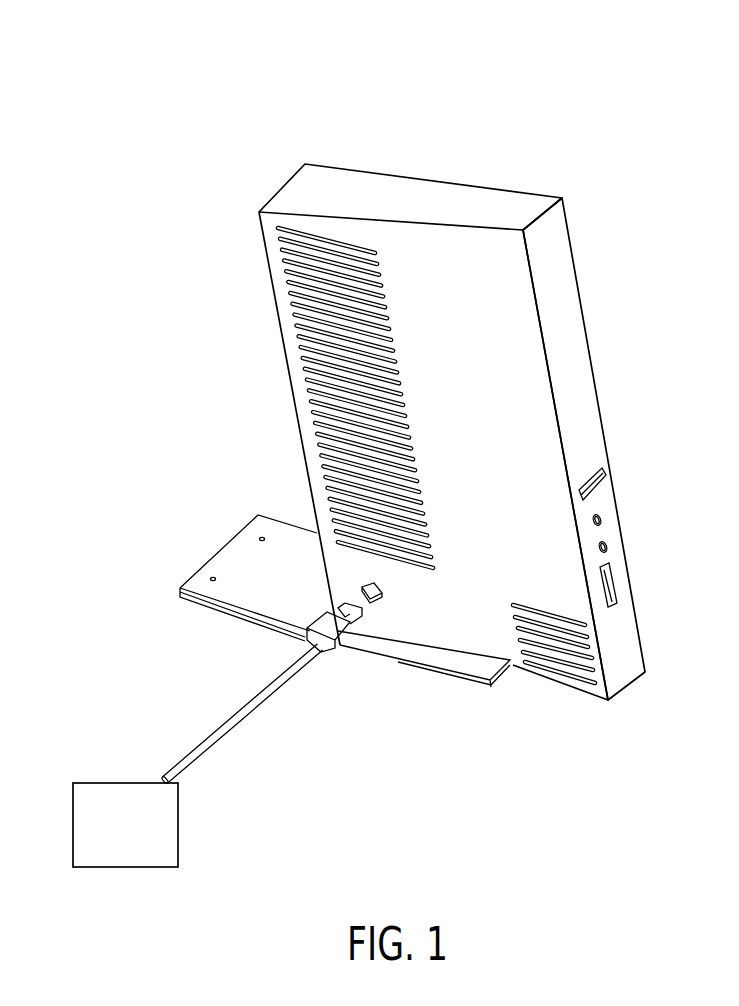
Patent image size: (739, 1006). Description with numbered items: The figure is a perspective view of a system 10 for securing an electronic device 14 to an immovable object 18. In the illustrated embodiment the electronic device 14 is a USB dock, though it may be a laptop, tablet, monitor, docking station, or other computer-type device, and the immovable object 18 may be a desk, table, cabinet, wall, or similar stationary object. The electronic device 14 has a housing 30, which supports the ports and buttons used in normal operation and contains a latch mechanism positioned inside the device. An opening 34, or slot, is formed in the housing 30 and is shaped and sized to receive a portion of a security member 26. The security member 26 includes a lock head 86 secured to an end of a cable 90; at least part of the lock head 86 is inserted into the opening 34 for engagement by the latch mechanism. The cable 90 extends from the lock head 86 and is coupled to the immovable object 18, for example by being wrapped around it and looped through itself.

The system 10 is at (523, 100).
The electronic device 14 is at (387, 190).
The housing 30 is at (558, 260).
The opening 34 is at (370, 601).
The lock head 86 is at (327, 655).
The security member 26 is at (245, 718).
The cable 90 is at (206, 742).
The immovable object 18 is at (123, 857).